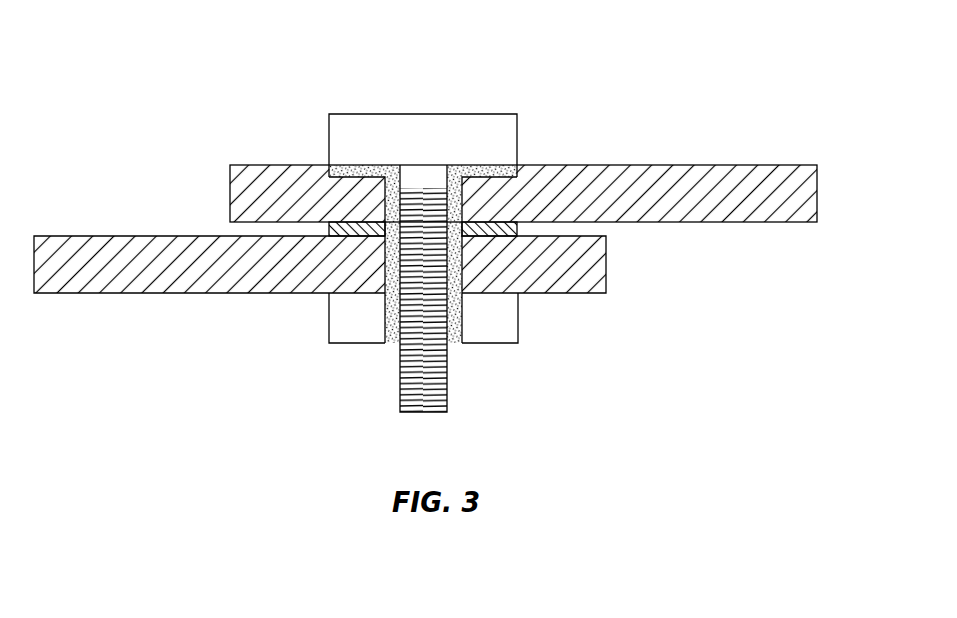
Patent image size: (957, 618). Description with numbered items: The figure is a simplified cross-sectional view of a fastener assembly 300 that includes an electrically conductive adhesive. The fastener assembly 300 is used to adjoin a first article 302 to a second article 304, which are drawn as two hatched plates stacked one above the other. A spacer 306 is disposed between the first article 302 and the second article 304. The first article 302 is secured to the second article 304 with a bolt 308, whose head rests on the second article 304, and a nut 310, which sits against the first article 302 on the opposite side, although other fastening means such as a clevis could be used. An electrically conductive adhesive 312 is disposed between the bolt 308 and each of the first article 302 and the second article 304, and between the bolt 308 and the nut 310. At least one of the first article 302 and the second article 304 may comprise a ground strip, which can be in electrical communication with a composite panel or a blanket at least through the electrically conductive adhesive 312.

The fastener assembly 300 is at (455, 213).
The first article 302 is at (597, 263).
The second article 304 is at (807, 197).
The spacer 306 is at (505, 229).
The bolt 308 is at (503, 135).
The nut 310 is at (503, 317).
The electrically conductive adhesive 312 is at (462, 330).